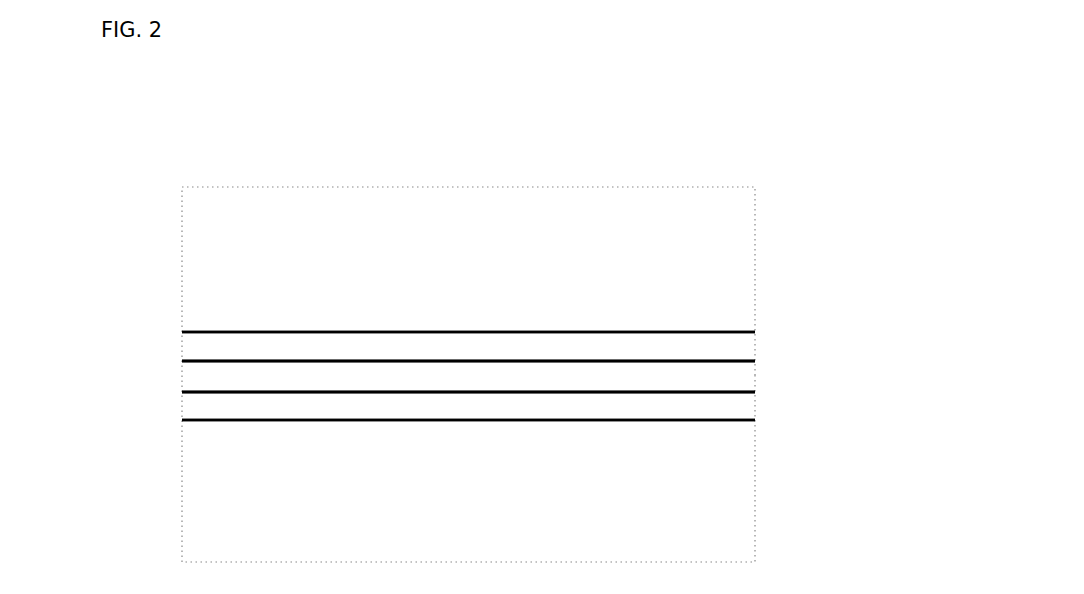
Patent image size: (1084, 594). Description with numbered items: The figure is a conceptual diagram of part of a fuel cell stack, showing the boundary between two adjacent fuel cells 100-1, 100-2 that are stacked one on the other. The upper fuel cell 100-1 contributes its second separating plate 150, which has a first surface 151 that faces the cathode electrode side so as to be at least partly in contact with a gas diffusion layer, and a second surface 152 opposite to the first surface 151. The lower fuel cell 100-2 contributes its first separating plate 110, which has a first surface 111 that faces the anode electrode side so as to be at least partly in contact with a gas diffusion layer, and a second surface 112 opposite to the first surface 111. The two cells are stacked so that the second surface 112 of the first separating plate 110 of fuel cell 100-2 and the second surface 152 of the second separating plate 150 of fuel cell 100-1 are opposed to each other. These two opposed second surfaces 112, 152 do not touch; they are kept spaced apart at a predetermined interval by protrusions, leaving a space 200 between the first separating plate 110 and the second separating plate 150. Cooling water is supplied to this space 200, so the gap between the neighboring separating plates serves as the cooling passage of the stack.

The fuel cell 100-1 is at (769, 249).
The fuel cell 100-2 is at (769, 493).
The first separating plate 110 is at (757, 405).
The first surface 111 is at (196, 420).
The second surface 112 is at (196, 392).
The second separating plate 150 is at (757, 348).
The first surface 151 is at (742, 330).
The second surface 152 is at (742, 364).
The space 200 is at (218, 380).